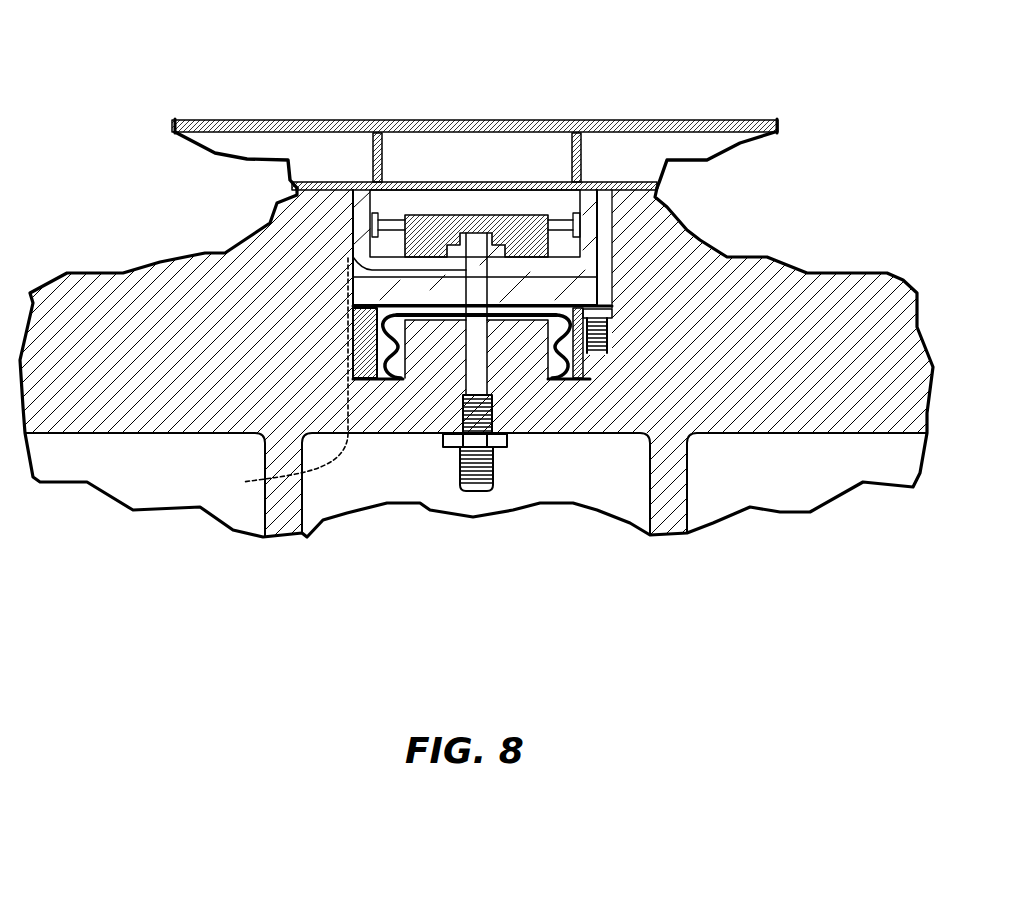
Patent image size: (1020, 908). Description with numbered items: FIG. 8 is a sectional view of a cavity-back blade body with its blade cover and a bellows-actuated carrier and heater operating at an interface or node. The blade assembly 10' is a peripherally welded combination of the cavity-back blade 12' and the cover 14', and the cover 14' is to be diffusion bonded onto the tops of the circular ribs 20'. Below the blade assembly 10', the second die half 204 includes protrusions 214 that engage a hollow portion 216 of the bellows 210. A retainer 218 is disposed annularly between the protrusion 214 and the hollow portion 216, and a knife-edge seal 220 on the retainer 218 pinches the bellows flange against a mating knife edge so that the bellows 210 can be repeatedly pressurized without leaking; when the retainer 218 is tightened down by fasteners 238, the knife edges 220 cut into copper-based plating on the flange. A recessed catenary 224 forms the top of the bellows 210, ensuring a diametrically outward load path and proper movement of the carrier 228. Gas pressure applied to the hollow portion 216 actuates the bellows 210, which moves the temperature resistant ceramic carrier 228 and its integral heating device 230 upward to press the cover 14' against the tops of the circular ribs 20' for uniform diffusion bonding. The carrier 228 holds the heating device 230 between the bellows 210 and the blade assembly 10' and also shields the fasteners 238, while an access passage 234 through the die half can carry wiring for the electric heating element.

The blade assembly 10' is at (499, 99).
The cavity-back blade 12' is at (475, 94).
The cover 14' is at (543, 186).
The circular ribs 20' is at (477, 157).
The second die half 204 is at (905, 283).
The bellows 210 is at (567, 377).
The protrusions 214 is at (422, 357).
The hollow portion 216 is at (393, 352).
The retainer 218 is at (592, 360).
The knife-edge seal 220 is at (367, 383).
The recessed catenary 224 is at (525, 306).
The carrier 228 is at (460, 304).
The heating device 230 is at (528, 213).
The access passage 234 is at (275, 380).
The fasteners 238 is at (608, 318).